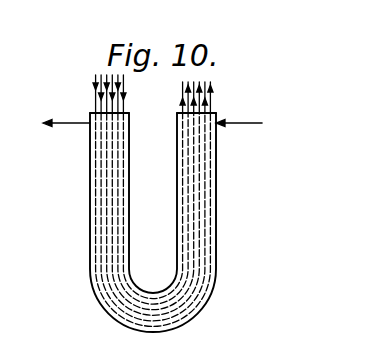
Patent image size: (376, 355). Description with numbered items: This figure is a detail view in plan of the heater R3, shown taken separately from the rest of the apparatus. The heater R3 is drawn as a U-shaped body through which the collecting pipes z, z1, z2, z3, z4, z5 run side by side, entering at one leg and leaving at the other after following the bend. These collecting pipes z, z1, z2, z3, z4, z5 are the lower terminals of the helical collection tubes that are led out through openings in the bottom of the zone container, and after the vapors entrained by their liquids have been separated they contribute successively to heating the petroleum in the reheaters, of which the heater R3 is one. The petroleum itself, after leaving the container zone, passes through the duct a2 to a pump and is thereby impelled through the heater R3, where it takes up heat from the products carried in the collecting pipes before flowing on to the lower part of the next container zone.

The heater R3 is at (90, 243).
The collecting pipe z is at (95, 93).
The collecting pipe z1 is at (99, 82).
The collecting pipe z2 is at (104, 83).
The collecting pipe z3 is at (115, 78).
The collecting pipe z4 is at (119, 86).
The collecting pipe z5 is at (124, 101).
The duct a2 is at (151, 125).